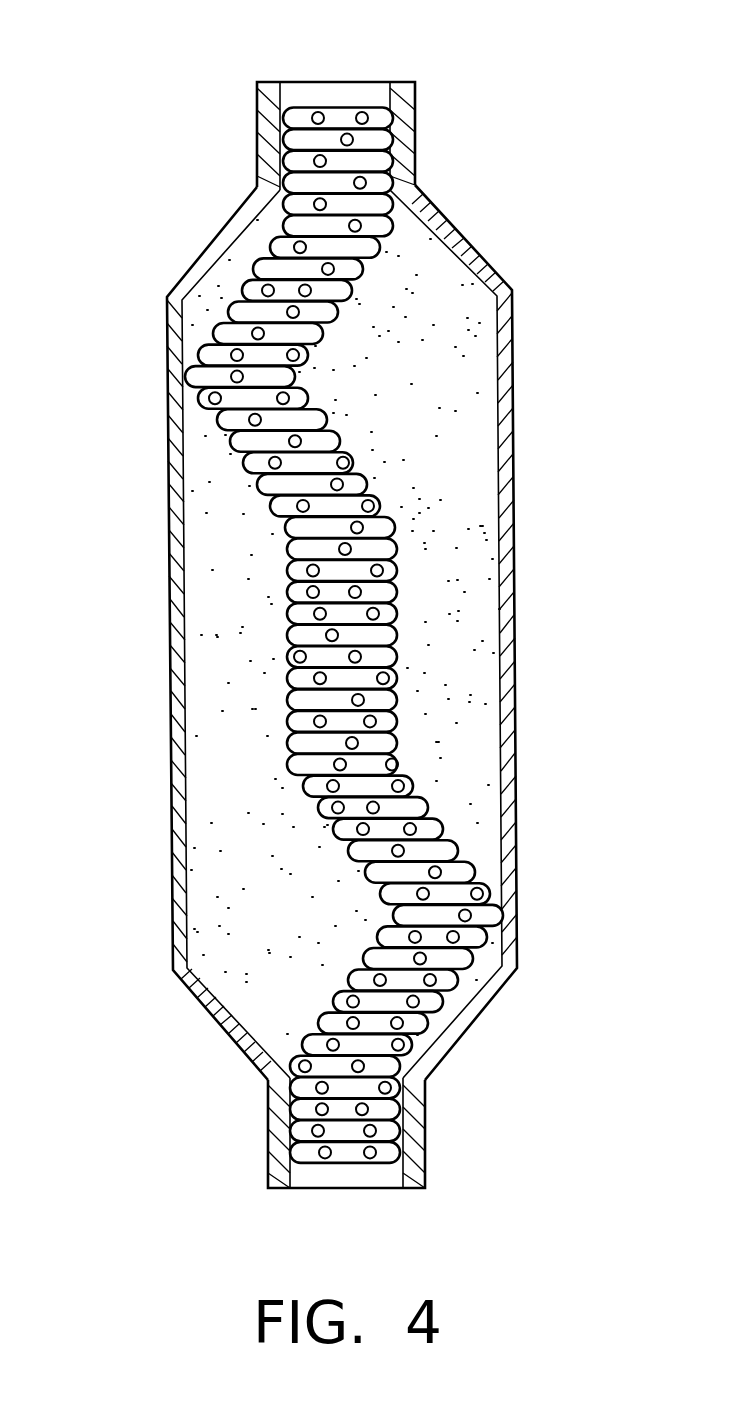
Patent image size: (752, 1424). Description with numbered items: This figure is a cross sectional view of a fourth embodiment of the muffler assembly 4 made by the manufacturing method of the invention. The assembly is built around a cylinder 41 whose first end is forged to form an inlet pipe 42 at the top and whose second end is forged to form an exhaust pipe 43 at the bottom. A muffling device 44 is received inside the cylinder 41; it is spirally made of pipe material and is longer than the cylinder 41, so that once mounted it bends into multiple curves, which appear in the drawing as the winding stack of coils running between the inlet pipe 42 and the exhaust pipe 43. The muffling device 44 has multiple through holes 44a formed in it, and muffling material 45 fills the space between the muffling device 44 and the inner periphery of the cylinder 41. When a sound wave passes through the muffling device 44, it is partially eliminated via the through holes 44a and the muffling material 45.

The muffler assembly 4 is at (340, 634).
The cylinder 41 is at (176, 754).
The inlet pipe 42 is at (327, 100).
The exhaust pipe 43 is at (368, 1172).
The muffling device 44 is at (383, 658).
The through holes 44a is at (317, 205).
The muffling material 45 is at (440, 337).